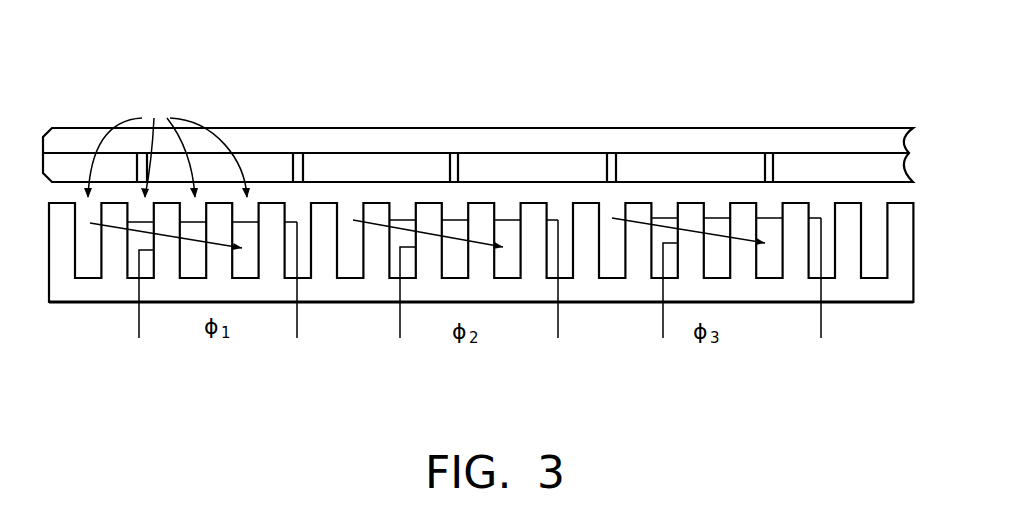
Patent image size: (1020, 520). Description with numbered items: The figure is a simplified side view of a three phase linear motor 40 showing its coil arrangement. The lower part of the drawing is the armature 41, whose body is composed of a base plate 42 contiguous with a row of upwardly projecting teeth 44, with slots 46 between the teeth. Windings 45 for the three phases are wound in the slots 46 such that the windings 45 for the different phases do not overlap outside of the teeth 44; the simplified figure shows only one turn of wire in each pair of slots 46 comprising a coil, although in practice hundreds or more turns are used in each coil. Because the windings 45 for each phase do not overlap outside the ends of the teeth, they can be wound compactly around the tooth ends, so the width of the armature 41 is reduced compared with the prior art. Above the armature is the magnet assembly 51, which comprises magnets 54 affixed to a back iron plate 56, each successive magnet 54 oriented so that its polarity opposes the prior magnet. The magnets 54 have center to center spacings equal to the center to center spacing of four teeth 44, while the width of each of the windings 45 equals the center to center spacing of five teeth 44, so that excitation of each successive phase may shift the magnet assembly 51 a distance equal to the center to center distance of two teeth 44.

The linear motor 40 is at (427, 118).
The armature 41 is at (645, 305).
The base plate 42 is at (803, 292).
The teeth 44 is at (55, 282).
The windings 45 is at (245, 253).
The slots 46 is at (167, 140).
The magnet assembly 51 is at (715, 127).
The magnets 54 is at (580, 162).
The back iron plate 56 is at (667, 138).